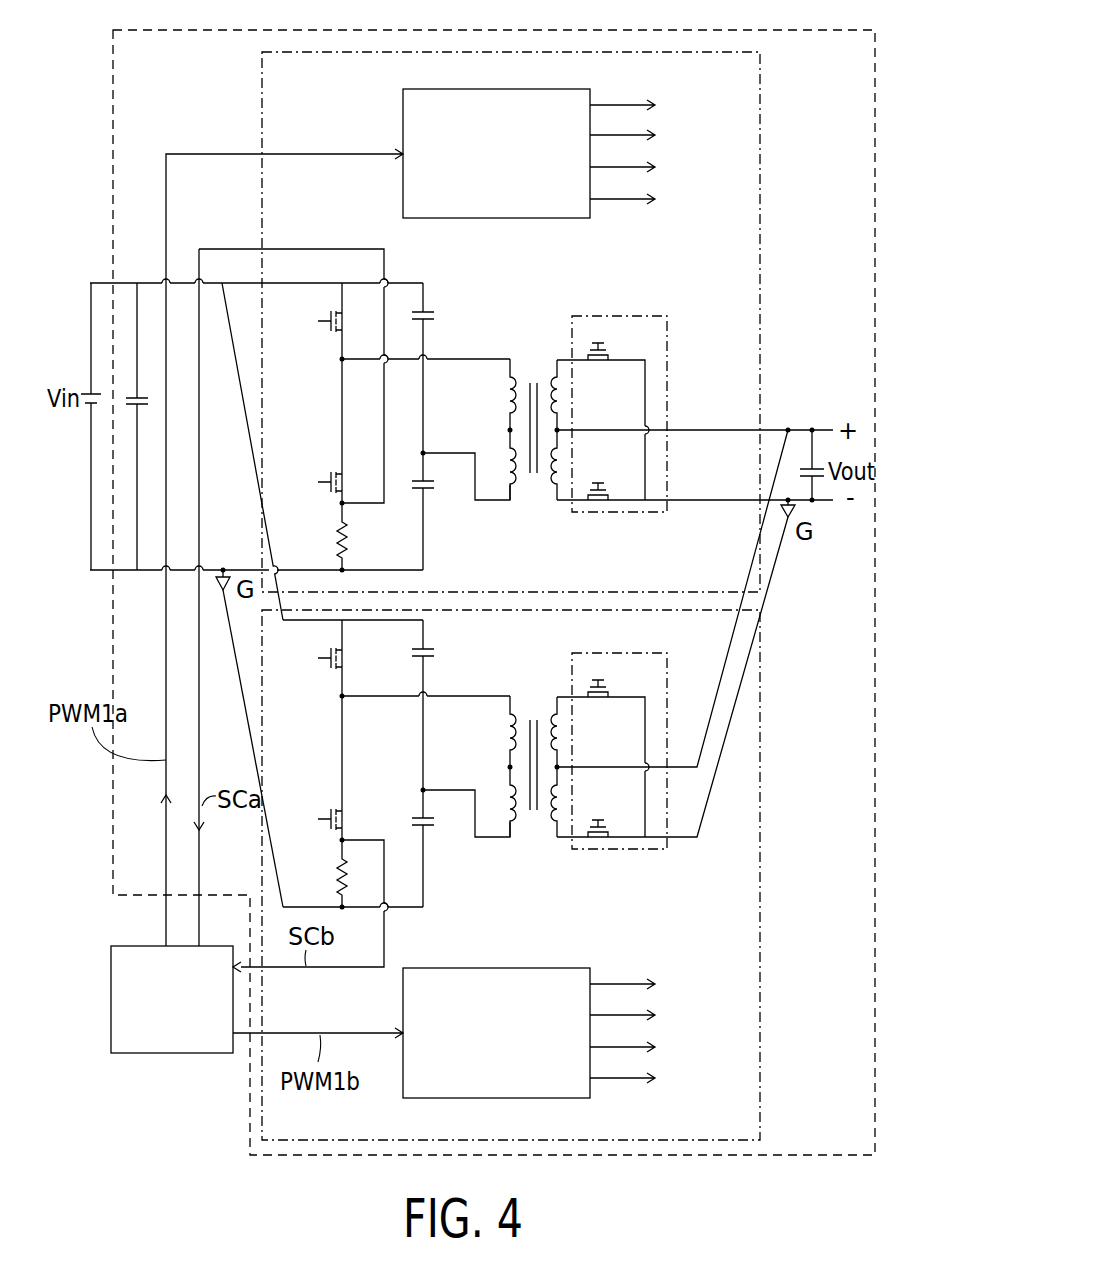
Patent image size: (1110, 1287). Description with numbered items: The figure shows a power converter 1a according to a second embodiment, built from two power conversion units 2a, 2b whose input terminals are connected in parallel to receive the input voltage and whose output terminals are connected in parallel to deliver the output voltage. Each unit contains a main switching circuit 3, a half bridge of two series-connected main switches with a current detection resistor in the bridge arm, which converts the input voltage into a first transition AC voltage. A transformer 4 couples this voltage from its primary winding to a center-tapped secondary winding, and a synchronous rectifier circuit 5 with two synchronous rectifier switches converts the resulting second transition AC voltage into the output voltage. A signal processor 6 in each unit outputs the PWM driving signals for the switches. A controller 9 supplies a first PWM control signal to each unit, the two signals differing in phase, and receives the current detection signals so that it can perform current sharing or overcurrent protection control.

The power converter 1a is at (788, 31).
The power conversion unit 2a is at (762, 266).
The power conversion unit 2b is at (762, 713).
The main switching circuit 3 is at (423, 275).
The transformer 4 is at (541, 366).
The synchronous rectifier circuit 5 is at (622, 316).
The signal processor 6 is at (498, 89).
The controller 9 is at (120, 946).